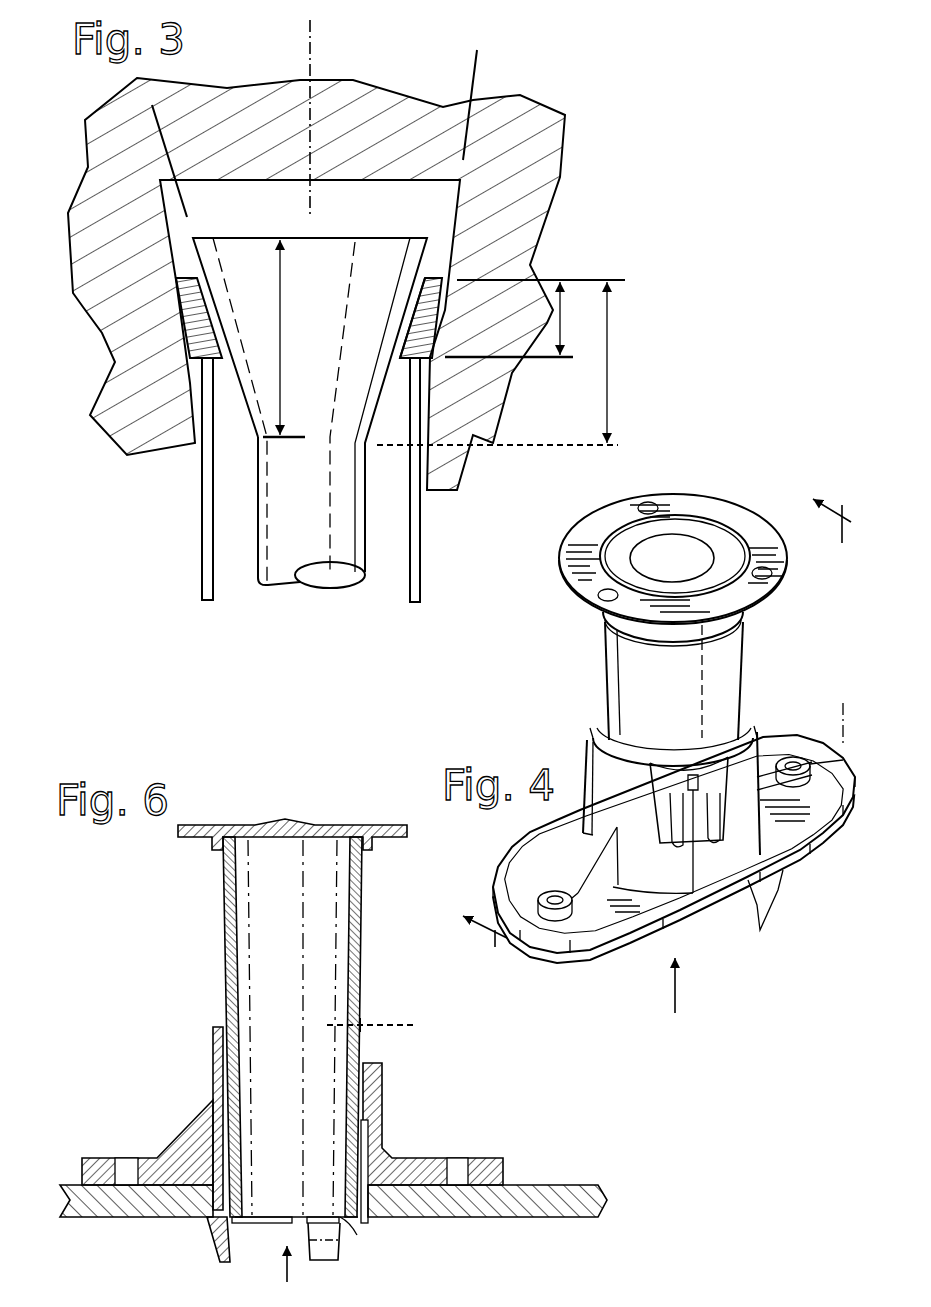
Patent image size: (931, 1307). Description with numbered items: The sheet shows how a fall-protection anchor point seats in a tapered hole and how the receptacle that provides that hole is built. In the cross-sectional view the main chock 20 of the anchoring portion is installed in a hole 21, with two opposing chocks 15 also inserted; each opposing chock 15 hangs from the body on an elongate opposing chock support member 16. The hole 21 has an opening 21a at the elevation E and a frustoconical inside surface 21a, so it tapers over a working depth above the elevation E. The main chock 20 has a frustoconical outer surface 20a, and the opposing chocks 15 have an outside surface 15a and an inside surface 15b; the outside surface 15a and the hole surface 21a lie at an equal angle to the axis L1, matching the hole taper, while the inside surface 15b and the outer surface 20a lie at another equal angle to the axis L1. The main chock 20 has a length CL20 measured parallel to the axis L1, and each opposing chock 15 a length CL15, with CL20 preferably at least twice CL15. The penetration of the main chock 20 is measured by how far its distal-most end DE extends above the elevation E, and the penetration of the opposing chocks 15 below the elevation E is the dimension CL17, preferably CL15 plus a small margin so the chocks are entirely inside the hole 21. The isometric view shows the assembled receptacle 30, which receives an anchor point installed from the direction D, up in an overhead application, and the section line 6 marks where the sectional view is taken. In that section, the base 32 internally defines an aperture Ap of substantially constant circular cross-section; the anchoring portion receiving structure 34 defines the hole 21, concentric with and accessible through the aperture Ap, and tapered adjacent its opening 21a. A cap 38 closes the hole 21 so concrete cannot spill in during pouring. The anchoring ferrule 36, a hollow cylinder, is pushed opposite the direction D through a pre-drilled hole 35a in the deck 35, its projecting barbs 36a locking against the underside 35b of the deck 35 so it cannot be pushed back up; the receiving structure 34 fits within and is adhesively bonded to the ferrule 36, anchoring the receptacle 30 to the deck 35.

In FIG. 3, the opposing chock 15 is at (428, 300).
In FIG. 3, the outside surface of opposing chock 15a is at (441, 304).
In FIG. 3, the inside surface of opposing chock 15b is at (403, 340).
In FIG. 3, the opposing chock support member 16 is at (201, 585).
In FIG. 3, the main chock 20 is at (310, 413).
In FIG. 3, the frustoconical outer surface of main chock 20a is at (432, 250).
In FIG. 3, the hole 21 is at (229, 425).
In FIG. 6, the hole 21 is at (290, 1024).
In FIG. 3, the hole opening and frustoconical inside surface 21a is at (195, 393).
In FIG. 6, the hole opening and frustoconical inside surface 21a is at (228, 902).
In FIG. 4, the receptacle 30 is at (828, 492).
In FIG. 6, the base 32 is at (429, 1130).
In FIG. 6, the anchoring portion receiving structure 34 is at (385, 944).
In FIG. 6, the deck 35 is at (530, 1185).
In FIG. 6, the pre-drilled hole in deck 35a is at (378, 1228).
In FIG. 6, the underside of deck 35b is at (75, 1222).
In FIG. 6, the anchoring ferrule 36 is at (215, 1092).
In FIG. 6, the projecting barbs 36a is at (212, 1246).
In FIG. 6, the cap 38 is at (296, 822).
In FIG. 4, the section line 6- 6 is at (646, 712).
In FIG. 4, the direction D is at (676, 996).
In FIG. 6, the direction D is at (288, 1272).
In FIG. 3, the elevation E is at (401, 450).
In FIG. 6, the elevation E is at (396, 1022).
In FIG. 3, the distal-most end DE is at (234, 234).
In FIG. 3, the axis L1 is at (309, 70).
In FIG. 6, the aperture Ap is at (283, 1190).
In FIG. 3, the length of opposing chock CL15 is at (562, 290).
In FIG. 3, the penetration depth of opposing chock CL17 is at (609, 374).
In FIG. 3, the length of main chock CL20 is at (282, 382).